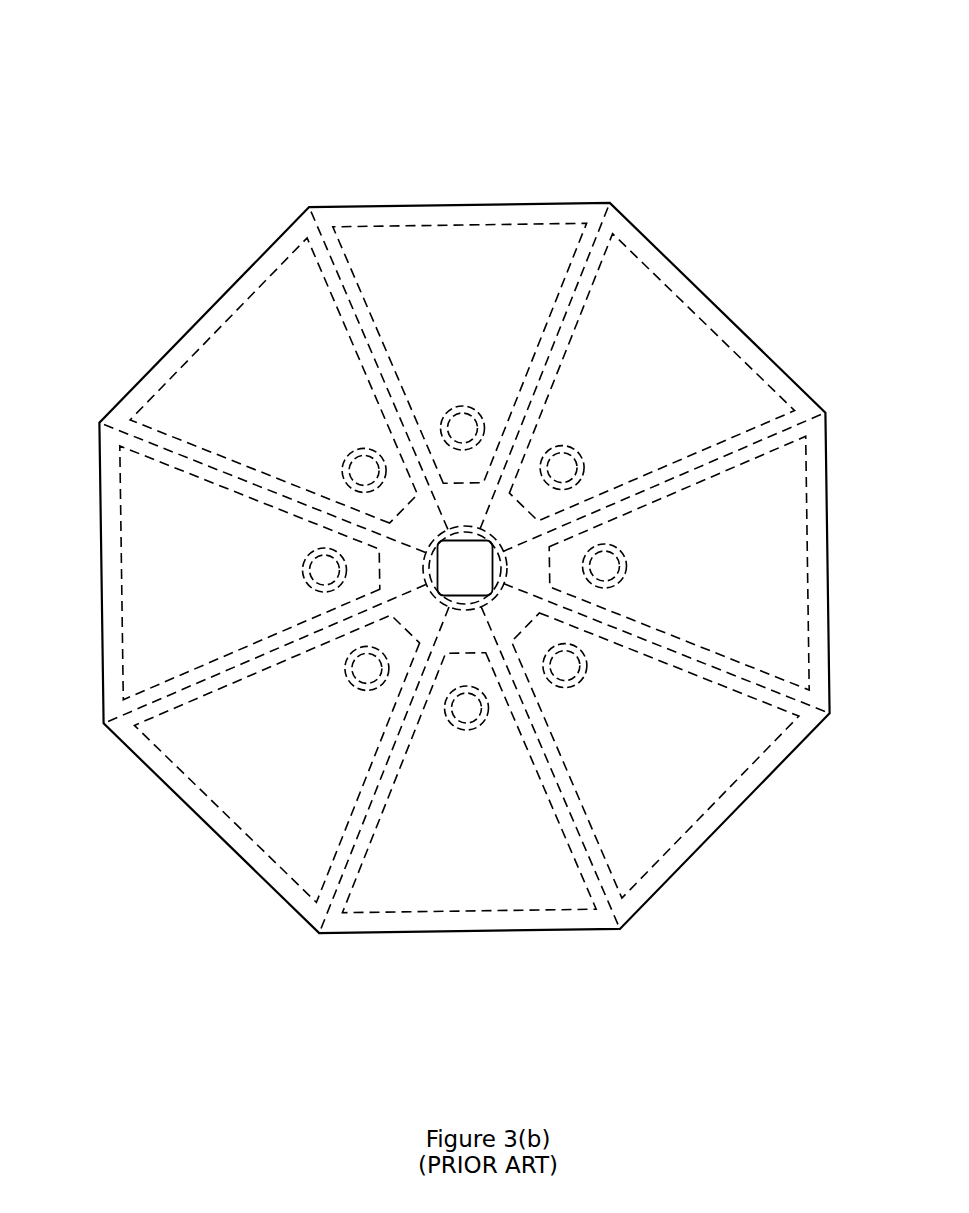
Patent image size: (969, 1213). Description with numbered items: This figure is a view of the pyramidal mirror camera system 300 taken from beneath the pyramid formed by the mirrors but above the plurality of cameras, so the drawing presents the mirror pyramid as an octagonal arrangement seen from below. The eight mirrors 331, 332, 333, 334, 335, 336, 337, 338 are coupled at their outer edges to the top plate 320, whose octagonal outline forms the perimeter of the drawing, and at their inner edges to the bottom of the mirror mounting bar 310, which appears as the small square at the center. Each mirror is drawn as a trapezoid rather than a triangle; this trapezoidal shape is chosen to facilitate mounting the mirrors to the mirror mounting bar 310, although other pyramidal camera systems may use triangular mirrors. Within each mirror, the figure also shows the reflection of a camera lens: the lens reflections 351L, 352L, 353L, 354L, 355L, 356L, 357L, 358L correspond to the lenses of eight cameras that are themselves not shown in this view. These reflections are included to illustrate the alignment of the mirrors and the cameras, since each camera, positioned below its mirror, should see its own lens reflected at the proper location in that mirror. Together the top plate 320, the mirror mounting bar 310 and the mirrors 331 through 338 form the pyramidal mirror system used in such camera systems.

The pyramidal mirror camera system 300 is at (90, 86).
The mirror mounting bar 310 is at (461, 521).
The top plate 320 is at (596, 933).
The mirror 331 is at (258, 845).
The mirror 332 is at (122, 536).
The mirror 333 is at (252, 292).
The mirror 334 is at (372, 224).
The mirror 335 is at (672, 290).
The mirror 336 is at (811, 535).
The mirror 337 is at (680, 845).
The mirror 338 is at (388, 913).
The lens reflection 351L is at (352, 687).
The lens reflection 352L is at (327, 548).
The lens reflection 353L is at (350, 456).
The lens reflection 354L is at (463, 406).
The lens reflection 355L is at (568, 447).
The lens reflection 356L is at (596, 549).
The lens reflection 357L is at (581, 684).
The lens reflection 358L is at (469, 731).